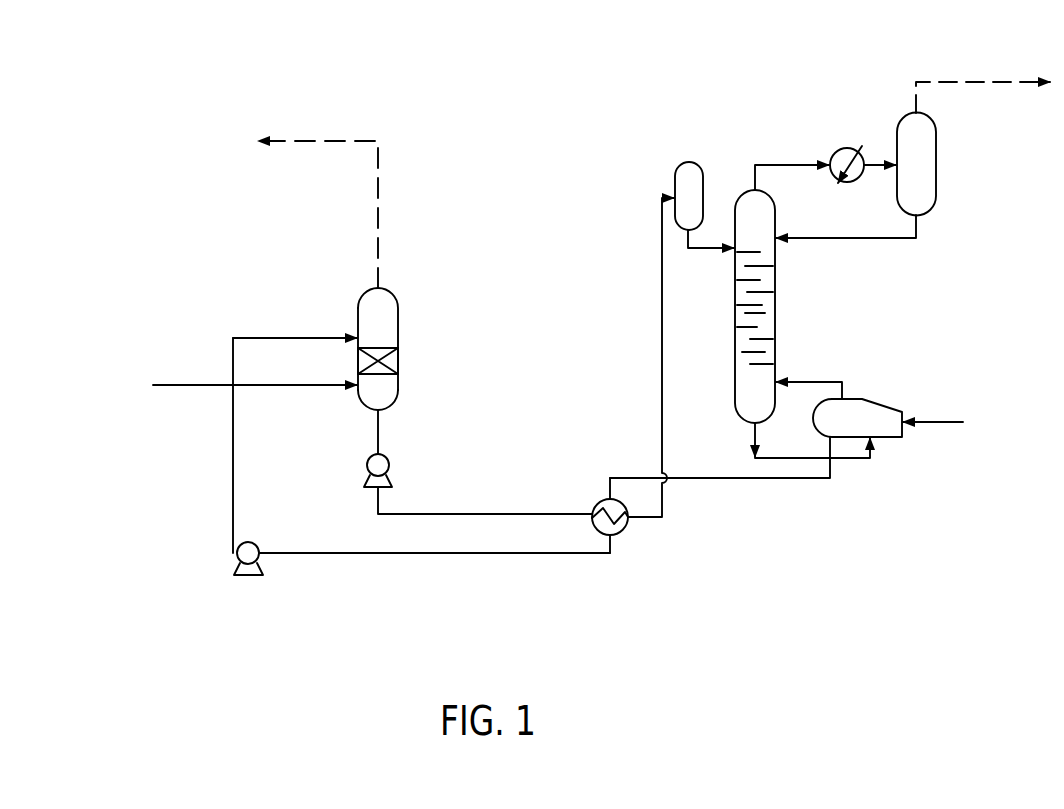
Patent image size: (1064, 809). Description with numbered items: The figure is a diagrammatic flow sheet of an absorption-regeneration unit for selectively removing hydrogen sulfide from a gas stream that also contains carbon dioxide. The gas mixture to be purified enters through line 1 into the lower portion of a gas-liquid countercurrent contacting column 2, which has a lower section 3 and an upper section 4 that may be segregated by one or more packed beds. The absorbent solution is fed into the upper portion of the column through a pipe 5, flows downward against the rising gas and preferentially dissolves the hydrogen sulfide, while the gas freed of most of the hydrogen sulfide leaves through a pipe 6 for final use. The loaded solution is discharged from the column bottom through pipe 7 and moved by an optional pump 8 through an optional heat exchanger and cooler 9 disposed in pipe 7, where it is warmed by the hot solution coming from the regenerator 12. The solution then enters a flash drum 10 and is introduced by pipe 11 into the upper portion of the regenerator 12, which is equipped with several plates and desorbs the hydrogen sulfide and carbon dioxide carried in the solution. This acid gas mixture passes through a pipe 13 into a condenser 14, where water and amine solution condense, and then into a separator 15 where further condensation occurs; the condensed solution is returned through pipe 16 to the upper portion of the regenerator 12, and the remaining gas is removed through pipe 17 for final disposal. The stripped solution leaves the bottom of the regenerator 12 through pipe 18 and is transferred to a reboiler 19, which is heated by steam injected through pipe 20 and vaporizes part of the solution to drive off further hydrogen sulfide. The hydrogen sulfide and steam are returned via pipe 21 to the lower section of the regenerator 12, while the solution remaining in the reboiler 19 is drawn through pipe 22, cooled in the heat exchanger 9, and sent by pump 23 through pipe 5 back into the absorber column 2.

The line 1 is at (268, 385).
The gas-liquid countercurrent contacting column 2 is at (398, 353).
The lower section 3 is at (400, 388).
The upper section 4 is at (395, 298).
The pipe 5 is at (256, 338).
The pipe 6 is at (378, 232).
The pipe 7 is at (399, 432).
The pump 8 is at (390, 465).
The heat exchanger and cooler 9 is at (626, 530).
The flash drum 10 is at (703, 170).
The pipe 11 is at (690, 245).
The regenerator 12 is at (775, 303).
The pipe 13 is at (785, 165).
The condenser 14 is at (844, 148).
The separator 15 is at (938, 164).
The pipe 16 is at (877, 238).
The pipe 17 is at (955, 82).
The pipe 18 is at (745, 432).
The reboiler 19 is at (882, 399).
The pipe 20 is at (925, 422).
The pipe 21 is at (829, 382).
The pipe 22 is at (830, 468).
The pump 23 is at (256, 545).